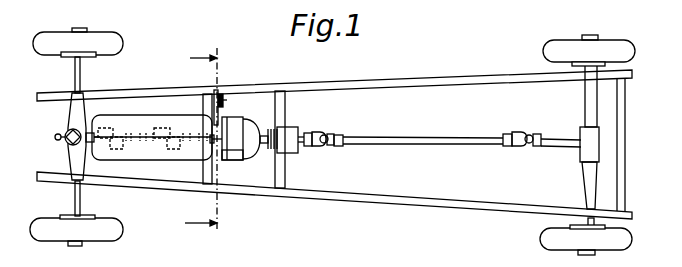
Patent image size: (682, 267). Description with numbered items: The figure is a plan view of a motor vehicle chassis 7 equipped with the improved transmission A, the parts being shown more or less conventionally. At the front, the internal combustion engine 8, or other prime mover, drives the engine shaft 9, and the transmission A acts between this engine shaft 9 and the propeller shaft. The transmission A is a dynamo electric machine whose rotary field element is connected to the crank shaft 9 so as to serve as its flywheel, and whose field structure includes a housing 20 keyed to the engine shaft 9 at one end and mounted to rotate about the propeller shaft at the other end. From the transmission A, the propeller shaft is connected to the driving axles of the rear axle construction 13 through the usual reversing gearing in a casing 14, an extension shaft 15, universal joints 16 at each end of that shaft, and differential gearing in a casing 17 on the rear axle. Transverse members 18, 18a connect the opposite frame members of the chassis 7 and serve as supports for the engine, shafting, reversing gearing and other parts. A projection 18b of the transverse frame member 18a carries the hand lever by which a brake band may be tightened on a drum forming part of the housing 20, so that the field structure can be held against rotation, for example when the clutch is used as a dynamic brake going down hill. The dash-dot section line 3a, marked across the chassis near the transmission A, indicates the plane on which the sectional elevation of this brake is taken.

The chassis 7 is at (398, 83).
The internal combustion engine 8 is at (120, 124).
The engine shaft 9 is at (210, 146).
The rear axle construction 13 is at (583, 102).
The casing 14 is at (293, 153).
The extension shaft 15 is at (455, 141).
The universal joints 16 is at (325, 149).
The casing 17 is at (596, 138).
The transverse member 18 is at (286, 115).
The transverse member 18a is at (192, 139).
The projection 18b is at (222, 93).
The housing 20 is at (239, 158).
The transmission A is at (236, 128).
The section line 3a is at (193, 141).